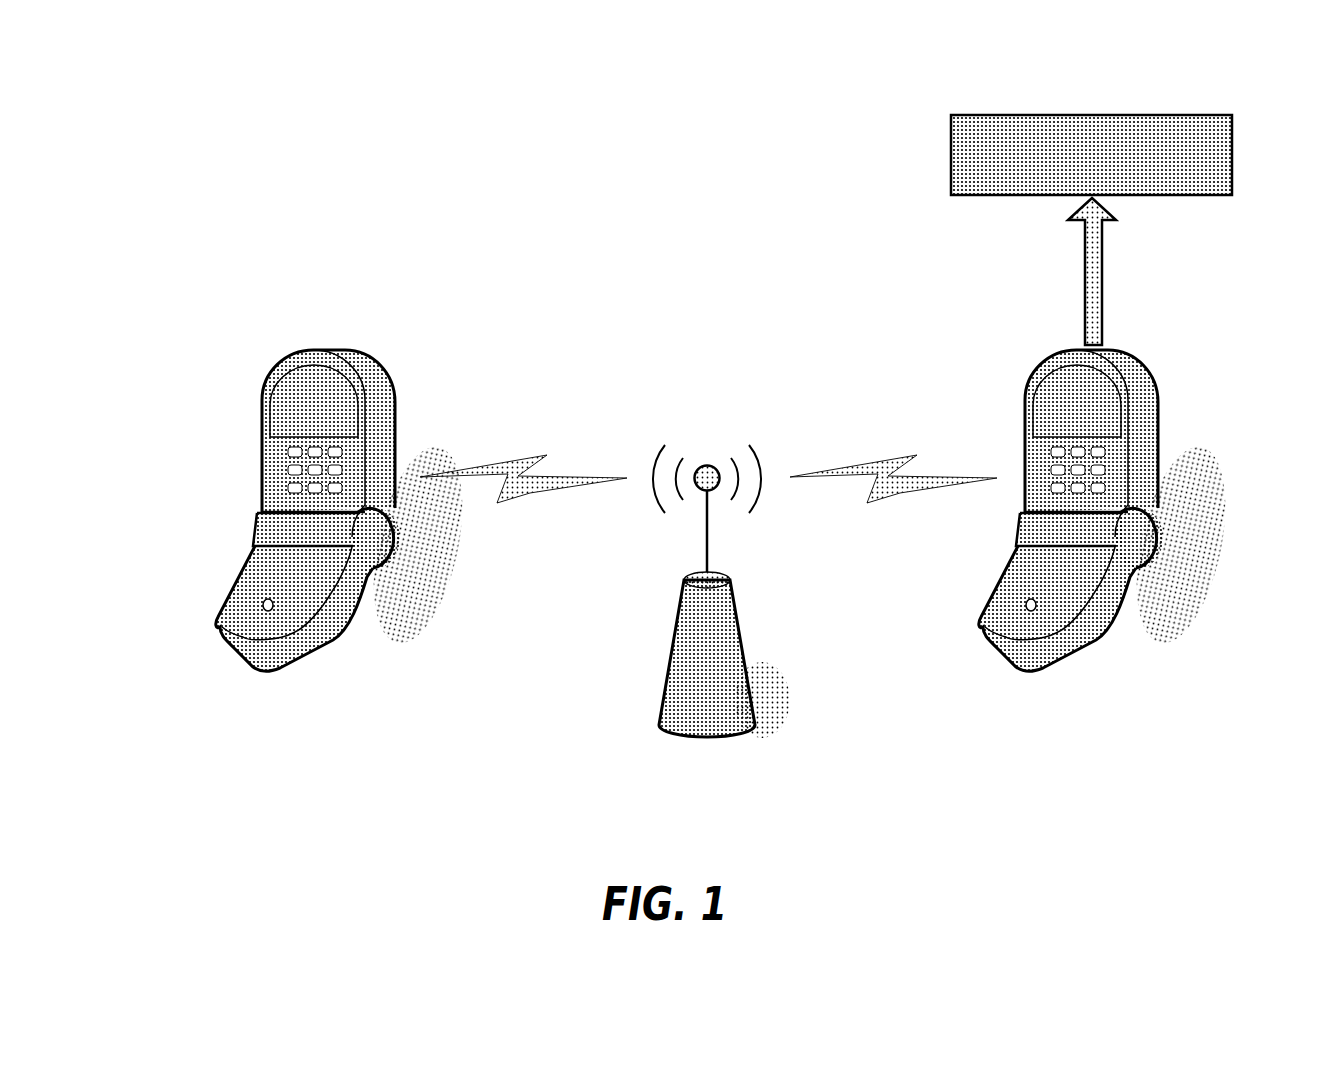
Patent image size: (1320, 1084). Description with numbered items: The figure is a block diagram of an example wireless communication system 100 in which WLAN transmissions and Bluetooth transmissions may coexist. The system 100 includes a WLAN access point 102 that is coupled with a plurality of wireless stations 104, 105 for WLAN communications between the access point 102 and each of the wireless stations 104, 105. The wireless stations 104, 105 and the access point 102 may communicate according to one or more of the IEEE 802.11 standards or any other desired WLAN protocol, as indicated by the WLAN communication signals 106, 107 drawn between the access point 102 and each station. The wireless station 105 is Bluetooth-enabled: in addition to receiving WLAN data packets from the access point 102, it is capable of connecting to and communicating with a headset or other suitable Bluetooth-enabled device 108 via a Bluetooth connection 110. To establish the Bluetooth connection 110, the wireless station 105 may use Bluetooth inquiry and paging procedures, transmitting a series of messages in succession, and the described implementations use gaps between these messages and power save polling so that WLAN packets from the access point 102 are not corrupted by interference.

The wireless communication system 100 is at (556, 198).
The WLAN access point 102 is at (666, 675).
The wireless station 104 is at (262, 430).
The wireless station 105 is at (1022, 412).
The WLAN communication signals 106 is at (533, 495).
The WLAN communication signals 107 is at (898, 497).
The Bluetooth-enabled device 108 is at (951, 152).
The Bluetooth connection 110 is at (1083, 273).